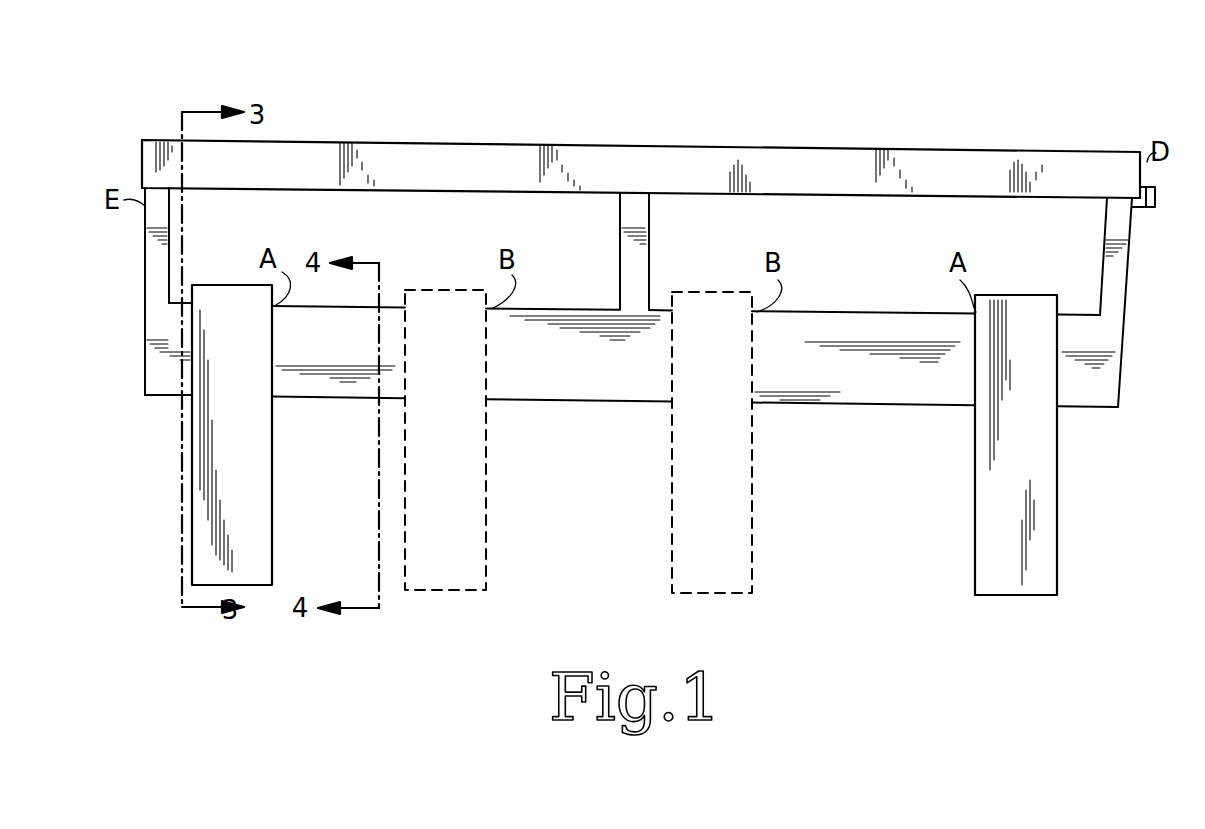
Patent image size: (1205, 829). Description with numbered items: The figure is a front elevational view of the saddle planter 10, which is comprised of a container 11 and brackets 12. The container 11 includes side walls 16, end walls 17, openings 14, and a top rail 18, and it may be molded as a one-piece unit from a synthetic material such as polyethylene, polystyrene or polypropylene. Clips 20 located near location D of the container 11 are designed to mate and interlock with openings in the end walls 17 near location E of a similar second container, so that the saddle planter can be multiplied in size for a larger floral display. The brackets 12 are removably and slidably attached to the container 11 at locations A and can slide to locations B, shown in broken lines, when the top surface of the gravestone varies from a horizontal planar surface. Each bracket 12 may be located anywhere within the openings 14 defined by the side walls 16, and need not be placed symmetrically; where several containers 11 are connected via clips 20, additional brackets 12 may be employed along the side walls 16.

The saddle planter 10 is at (492, 118).
The container 11 is at (810, 150).
The brackets 12 is at (272, 545).
The openings 14 is at (418, 208).
The side walls 16 is at (165, 378).
The end walls 17 is at (145, 301).
The top rail 18 is at (584, 160).
The clips 20 is at (1158, 196).